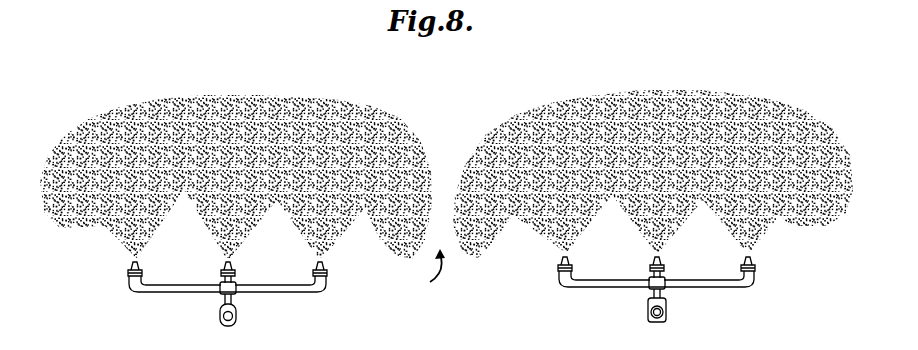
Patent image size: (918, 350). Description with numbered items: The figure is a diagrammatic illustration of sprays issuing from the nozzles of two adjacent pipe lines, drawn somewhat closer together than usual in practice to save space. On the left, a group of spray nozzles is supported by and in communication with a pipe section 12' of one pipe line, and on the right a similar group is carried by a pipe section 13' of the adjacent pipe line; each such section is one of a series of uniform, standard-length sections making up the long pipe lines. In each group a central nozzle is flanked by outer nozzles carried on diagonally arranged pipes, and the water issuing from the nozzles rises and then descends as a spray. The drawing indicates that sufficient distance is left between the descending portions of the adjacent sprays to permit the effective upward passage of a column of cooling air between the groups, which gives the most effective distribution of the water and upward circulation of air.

The pipe section 12' is at (240, 316).
The pipe section 13' is at (679, 310).